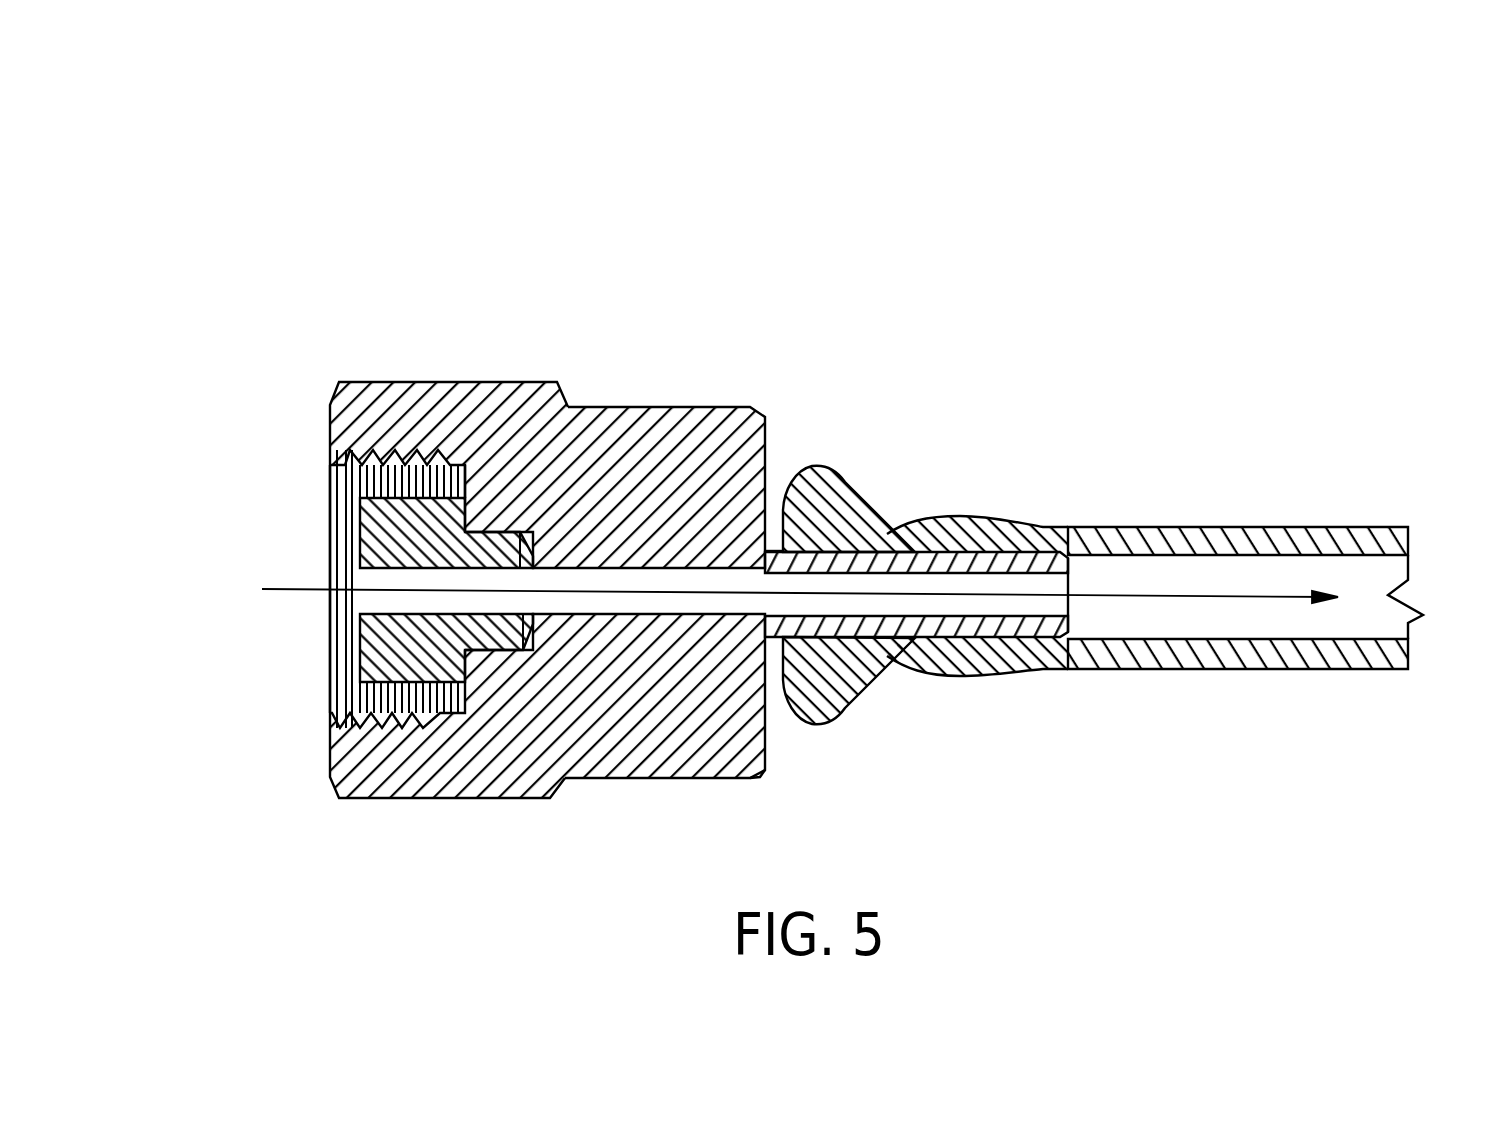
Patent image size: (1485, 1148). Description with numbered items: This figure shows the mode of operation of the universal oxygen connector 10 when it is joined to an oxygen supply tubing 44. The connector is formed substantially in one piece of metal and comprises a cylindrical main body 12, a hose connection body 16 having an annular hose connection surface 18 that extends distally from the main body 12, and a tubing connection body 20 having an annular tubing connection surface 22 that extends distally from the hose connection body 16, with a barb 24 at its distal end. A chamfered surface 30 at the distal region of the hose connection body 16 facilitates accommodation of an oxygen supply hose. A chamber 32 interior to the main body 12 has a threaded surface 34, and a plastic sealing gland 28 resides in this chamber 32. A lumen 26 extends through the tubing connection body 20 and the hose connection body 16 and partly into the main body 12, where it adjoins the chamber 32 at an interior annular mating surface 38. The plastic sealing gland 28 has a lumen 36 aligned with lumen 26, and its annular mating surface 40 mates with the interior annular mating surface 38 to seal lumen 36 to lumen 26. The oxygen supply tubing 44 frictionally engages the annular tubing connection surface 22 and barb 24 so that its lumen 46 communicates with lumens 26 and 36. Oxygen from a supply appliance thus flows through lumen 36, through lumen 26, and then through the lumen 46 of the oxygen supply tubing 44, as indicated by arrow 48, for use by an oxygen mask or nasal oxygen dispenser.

The universal oxygen connector 10 is at (938, 197).
The main body 12 is at (370, 382).
The hose connection body 16 is at (564, 553).
The annular hose connection surface 18 is at (668, 407).
The tubing connection body 20 is at (880, 558).
The annular tubing connection surface 22 is at (774, 550).
The barb 24 is at (1040, 535).
The lumen 26 is at (1060, 594).
The plastic sealing gland 28 is at (370, 521).
The chamfered surface 30 is at (762, 779).
The chamber 32 is at (318, 541).
The threaded surface 34 is at (343, 650).
The lumen 36 is at (370, 578).
The interior annular mating surface 38 is at (465, 482).
The annular mating surface 40 is at (370, 668).
The oxygen supply tubing 44 is at (1273, 660).
The lumen 46 is at (1383, 620).
The arrow 48 is at (1200, 596).